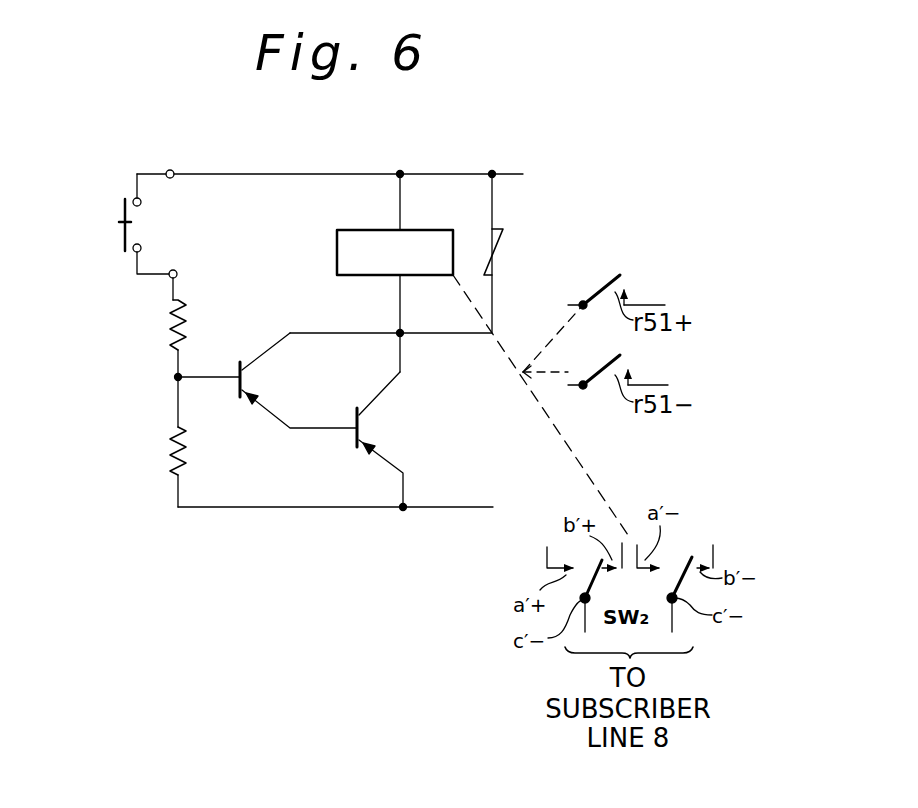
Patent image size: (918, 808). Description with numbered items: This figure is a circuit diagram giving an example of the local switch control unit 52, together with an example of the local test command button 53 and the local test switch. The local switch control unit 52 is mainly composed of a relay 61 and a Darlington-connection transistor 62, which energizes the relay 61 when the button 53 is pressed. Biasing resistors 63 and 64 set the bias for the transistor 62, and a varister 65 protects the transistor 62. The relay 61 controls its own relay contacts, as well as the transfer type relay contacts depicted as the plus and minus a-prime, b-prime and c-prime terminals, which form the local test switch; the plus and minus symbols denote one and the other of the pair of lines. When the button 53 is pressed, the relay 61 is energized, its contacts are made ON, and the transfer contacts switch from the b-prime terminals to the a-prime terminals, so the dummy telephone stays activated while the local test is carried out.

The local switch control unit 52 is at (285, 137).
The local test command button 53 is at (122, 224).
The relay 61 is at (428, 230).
The Darlington-connection transistor 62 is at (378, 370).
The biasing resistor 63 is at (168, 328).
The biasing resistor 64 is at (168, 458).
The varister 65 is at (503, 232).